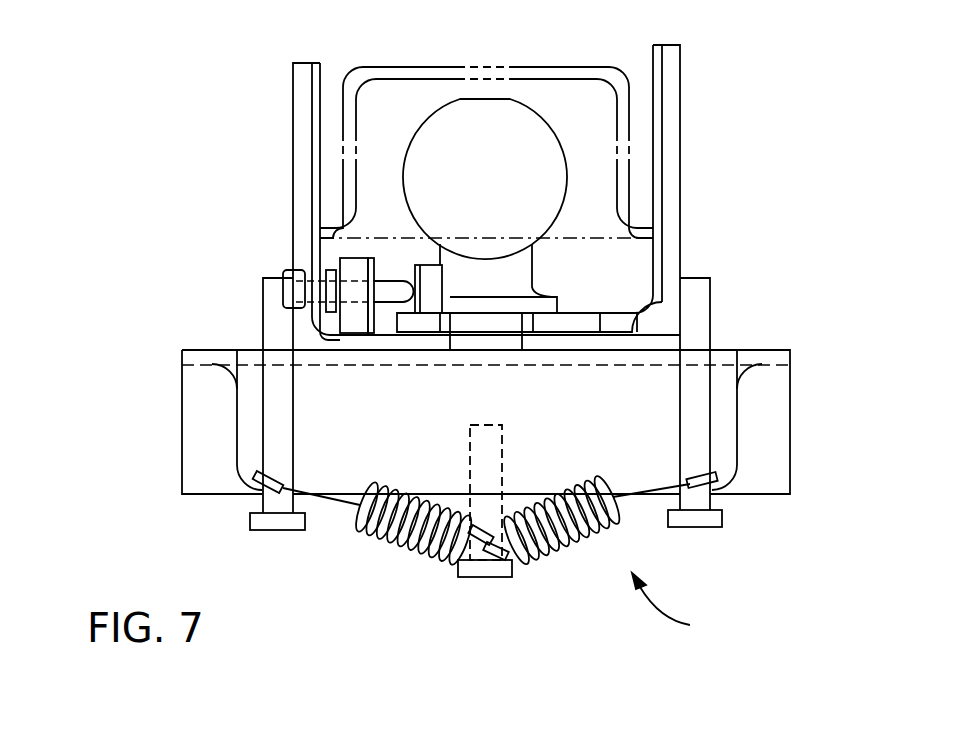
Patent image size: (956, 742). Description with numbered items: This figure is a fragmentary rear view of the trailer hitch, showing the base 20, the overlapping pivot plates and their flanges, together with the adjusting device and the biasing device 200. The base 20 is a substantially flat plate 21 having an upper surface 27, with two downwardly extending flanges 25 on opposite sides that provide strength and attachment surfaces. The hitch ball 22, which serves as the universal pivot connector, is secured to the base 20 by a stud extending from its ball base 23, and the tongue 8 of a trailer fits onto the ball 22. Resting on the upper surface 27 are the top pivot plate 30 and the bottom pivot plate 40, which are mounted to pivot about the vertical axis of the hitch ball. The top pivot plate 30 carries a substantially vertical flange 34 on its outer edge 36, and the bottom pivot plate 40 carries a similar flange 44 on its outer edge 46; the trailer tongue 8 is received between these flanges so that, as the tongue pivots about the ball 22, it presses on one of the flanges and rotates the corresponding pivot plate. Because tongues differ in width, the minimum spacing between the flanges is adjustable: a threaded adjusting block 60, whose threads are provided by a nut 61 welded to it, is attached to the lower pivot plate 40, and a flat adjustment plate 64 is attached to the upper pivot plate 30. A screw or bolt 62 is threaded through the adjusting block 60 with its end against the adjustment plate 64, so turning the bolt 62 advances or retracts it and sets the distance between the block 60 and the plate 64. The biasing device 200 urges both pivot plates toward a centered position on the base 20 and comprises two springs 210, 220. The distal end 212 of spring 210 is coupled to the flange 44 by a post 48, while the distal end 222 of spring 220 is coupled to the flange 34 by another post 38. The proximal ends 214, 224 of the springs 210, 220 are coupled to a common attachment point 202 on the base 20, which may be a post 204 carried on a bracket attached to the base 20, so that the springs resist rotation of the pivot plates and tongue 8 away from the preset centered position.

The trailer tongue 8 is at (567, 63).
The base 20 is at (778, 403).
The flat plate 21 is at (775, 350).
The hitch ball 22 is at (460, 110).
The ball base 23 is at (507, 305).
The downwardly extending flanges 25 is at (773, 453).
The upper surface 27 is at (745, 350).
The top pivot plate 30 is at (610, 323).
The flange 34 is at (672, 90).
The outer edge 36 is at (638, 327).
The post 38 is at (693, 503).
The bottom pivot plate 40 is at (355, 345).
The flange 44 is at (303, 120).
The outer edge 46 is at (340, 342).
The post 48 is at (280, 503).
The threaded adjusting block 60 is at (360, 258).
The nut 61 is at (320, 258).
The screw or bolt 62 is at (292, 272).
The flat adjustment plate 64 is at (415, 265).
The biasing device 200 is at (684, 607).
The attachment point 202 is at (500, 442).
The post 204 is at (470, 575).
The spring 210 is at (397, 543).
The distal end 212 is at (273, 480).
The proximal end 214 is at (485, 575).
The spring 220 is at (550, 560).
The distal end 222 is at (700, 480).
The proximal end 224 is at (487, 527).